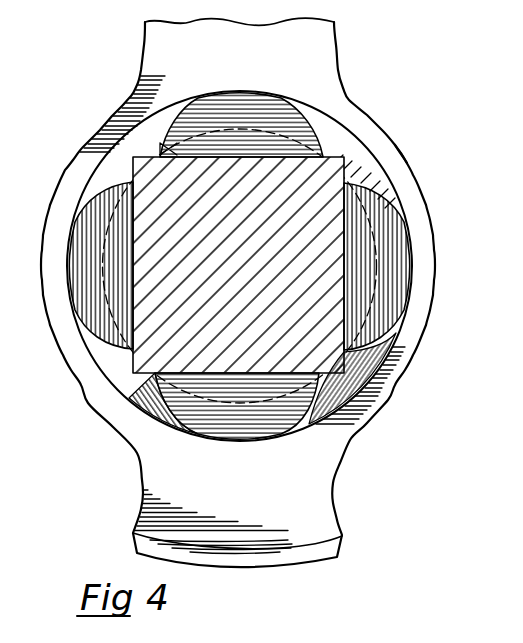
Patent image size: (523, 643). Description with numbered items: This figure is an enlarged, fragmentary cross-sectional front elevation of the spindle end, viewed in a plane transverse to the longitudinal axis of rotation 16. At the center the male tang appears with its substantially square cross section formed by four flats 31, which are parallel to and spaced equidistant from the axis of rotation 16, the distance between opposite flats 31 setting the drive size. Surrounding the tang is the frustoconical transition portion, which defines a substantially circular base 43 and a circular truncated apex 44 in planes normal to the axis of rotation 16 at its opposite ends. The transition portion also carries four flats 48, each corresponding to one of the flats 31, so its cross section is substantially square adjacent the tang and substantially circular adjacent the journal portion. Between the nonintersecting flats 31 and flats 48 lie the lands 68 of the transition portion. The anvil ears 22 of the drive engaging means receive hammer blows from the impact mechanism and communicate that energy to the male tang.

The anvil ears 22 is at (333, 525).
The longitudinal axis of rotation 16 is at (240, 262).
The flats on the transition portion 48 is at (273, 100).
The flats on the tang 31 is at (160, 148).
The circular base 43 is at (397, 159).
The circular truncated apex 44 is at (302, 428).
The lands of the transition portion 68 is at (353, 147).